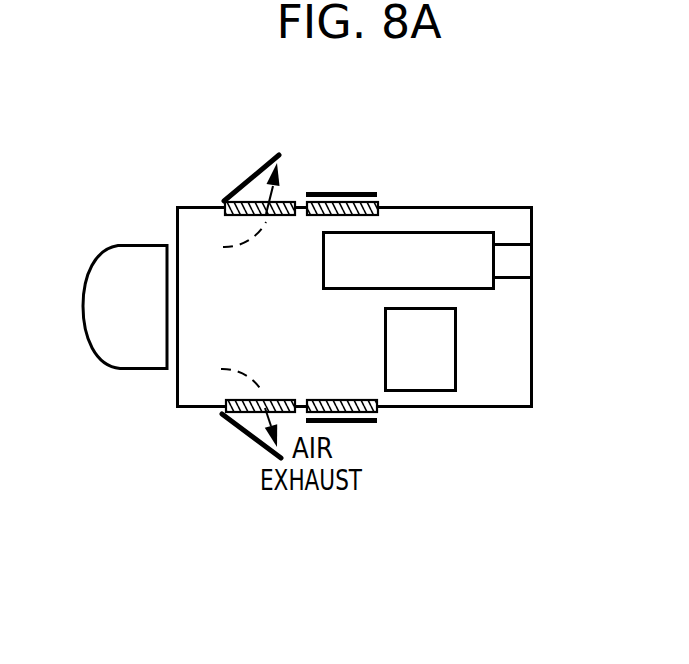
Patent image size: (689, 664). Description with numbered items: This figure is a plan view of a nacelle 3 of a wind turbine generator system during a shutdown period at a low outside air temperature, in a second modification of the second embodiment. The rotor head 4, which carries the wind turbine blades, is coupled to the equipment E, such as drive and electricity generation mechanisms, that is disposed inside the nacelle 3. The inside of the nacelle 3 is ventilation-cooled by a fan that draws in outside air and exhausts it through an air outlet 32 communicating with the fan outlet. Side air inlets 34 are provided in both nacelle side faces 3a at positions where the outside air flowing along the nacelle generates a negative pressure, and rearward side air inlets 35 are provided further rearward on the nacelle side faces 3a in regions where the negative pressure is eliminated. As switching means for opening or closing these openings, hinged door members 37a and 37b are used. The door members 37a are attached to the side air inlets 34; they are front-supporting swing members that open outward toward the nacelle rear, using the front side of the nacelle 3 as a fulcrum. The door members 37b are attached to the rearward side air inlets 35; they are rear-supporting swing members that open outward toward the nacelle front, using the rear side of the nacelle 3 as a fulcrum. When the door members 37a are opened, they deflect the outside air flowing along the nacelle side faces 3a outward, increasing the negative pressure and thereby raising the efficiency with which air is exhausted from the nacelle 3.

The nacelle 3 is at (532, 329).
The nacelle side faces 3a is at (487, 407).
The rotor head 4 is at (83, 302).
The air outlet 32 is at (532, 257).
The side air inlets 34 is at (275, 215).
The rearward side air inlets 35 is at (382, 203).
The door members 37a is at (242, 188).
The door members 37b is at (340, 192).
The equipment E is at (472, 230).